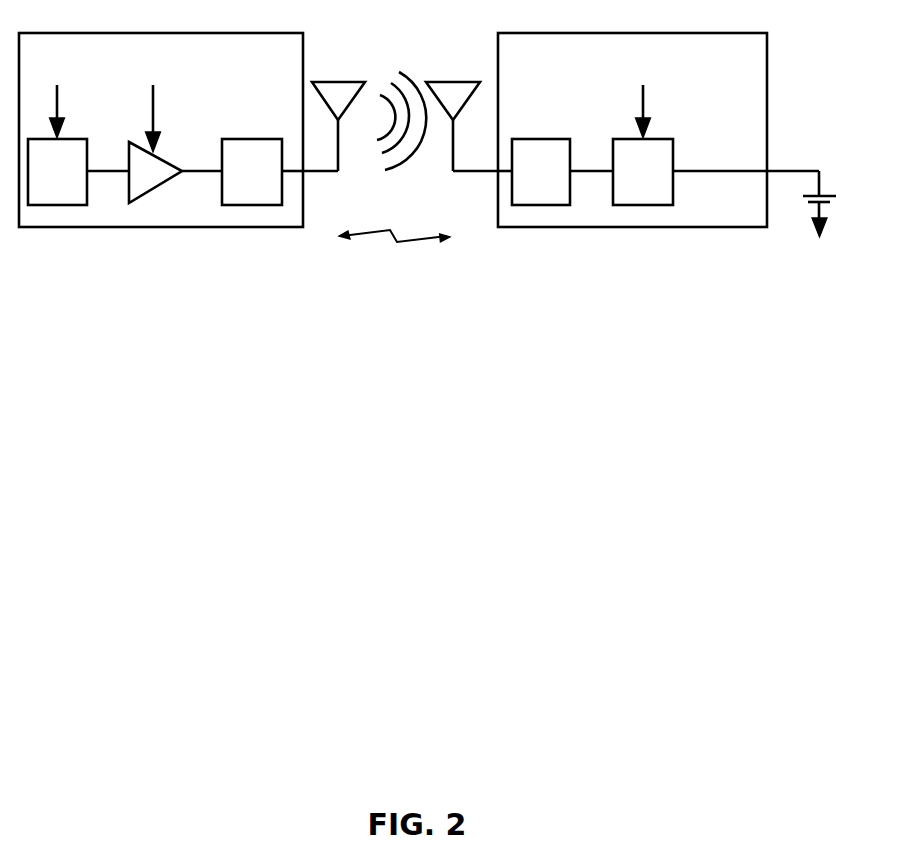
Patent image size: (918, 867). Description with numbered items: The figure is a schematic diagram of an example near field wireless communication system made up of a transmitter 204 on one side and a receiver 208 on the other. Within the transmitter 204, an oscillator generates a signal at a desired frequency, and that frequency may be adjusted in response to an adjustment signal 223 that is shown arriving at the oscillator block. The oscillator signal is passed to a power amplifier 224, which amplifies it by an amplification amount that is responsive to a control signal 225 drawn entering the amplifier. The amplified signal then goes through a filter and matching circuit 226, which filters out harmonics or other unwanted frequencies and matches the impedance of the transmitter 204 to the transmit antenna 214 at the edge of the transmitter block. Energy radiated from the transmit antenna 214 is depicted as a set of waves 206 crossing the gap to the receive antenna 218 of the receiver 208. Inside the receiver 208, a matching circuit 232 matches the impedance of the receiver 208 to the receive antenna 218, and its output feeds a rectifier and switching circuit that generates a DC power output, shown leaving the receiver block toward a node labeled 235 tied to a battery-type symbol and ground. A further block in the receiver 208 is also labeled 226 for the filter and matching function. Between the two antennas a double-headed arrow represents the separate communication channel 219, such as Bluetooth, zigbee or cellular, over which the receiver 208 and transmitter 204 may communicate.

The transmitter 204 is at (143, 61).
The transmit antenna 214 is at (40, 193).
The adjustment signal 223 is at (57, 100).
The power amplifier 224 is at (131, 180).
The control signal 225 is at (153, 100).
The filter and matching circuit 226 is at (235, 183).
The wireless power transfer waves 206 is at (401, 170).
The receive antenna 218 is at (467, 82).
The communication channel 219 is at (399, 256).
The receiver 208 is at (615, 63).
The matching circuit 232 is at (524, 183).
The rectifier switching control signal / output node 235 is at (643, 102).